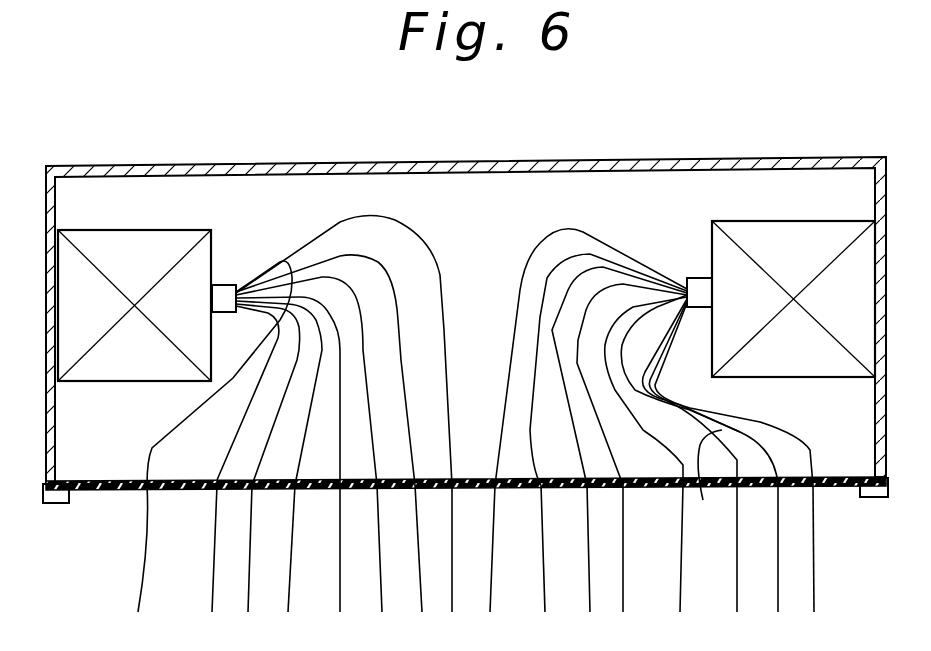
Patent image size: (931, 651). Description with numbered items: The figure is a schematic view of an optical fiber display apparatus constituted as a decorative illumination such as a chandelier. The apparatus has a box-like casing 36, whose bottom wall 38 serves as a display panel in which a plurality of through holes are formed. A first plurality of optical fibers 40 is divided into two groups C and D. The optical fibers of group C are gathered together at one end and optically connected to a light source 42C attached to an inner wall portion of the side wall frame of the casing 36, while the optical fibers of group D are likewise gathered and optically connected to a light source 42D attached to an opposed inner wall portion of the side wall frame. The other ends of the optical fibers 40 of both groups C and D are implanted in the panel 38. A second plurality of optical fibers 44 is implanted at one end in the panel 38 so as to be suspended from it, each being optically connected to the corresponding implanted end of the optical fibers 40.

The box-like casing 36 is at (466, 286).
The bottom wall 38 is at (465, 521).
The first plurality of optical fibers 40 is at (467, 359).
The light source 42C is at (168, 231).
The light source 42D is at (733, 224).
The second plurality of optical fibers 44 is at (292, 557).
The group of optical fibers C is at (351, 330).
The group of optical fibers D is at (591, 332).